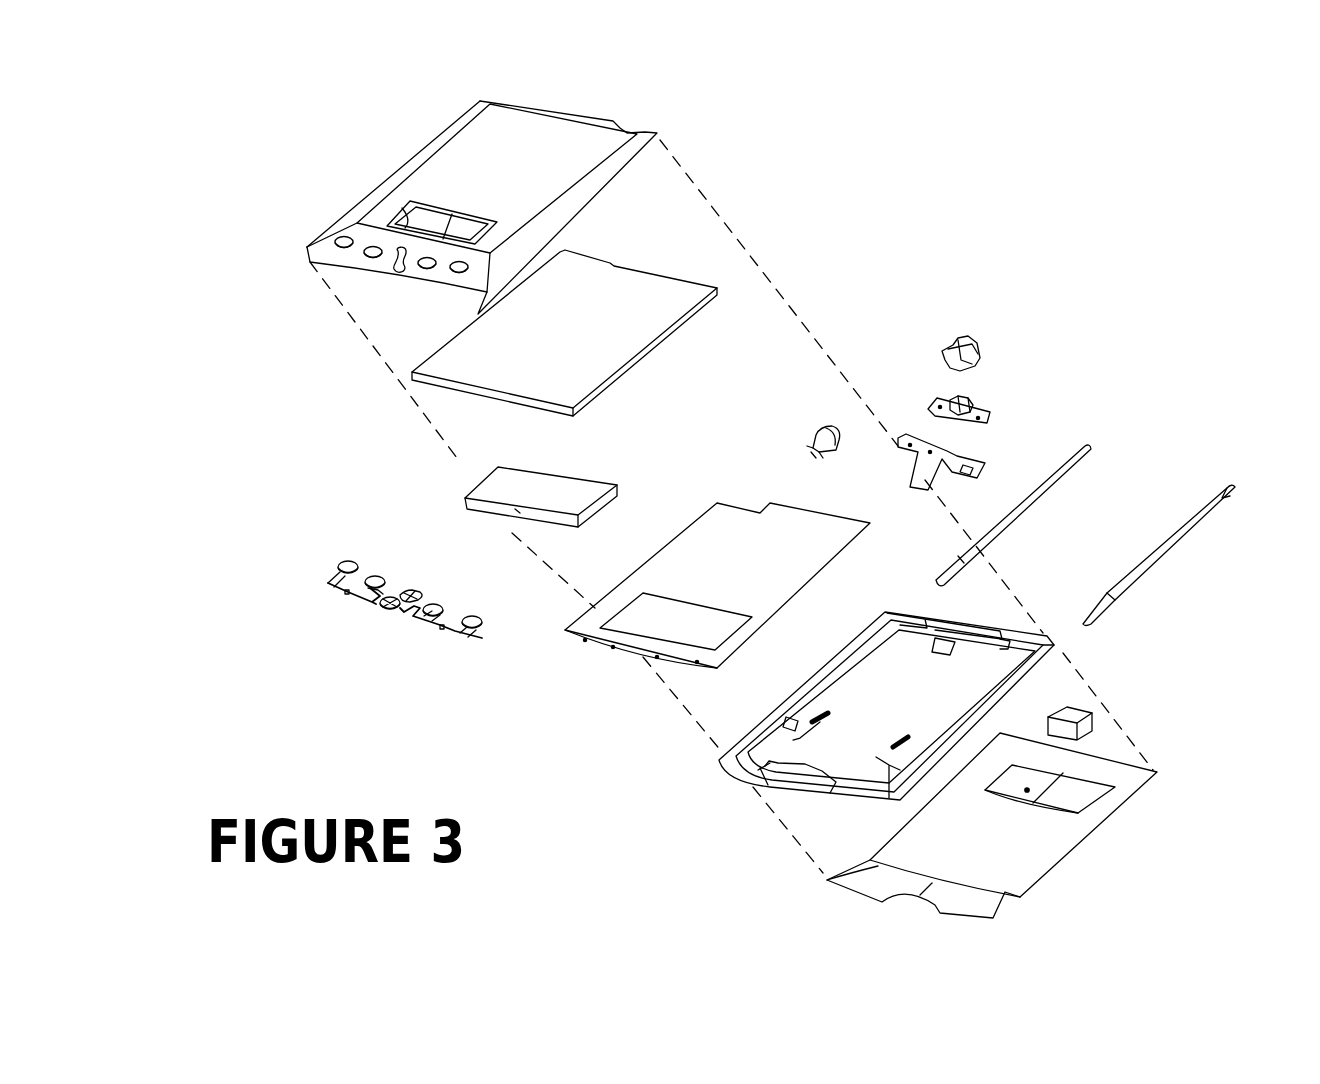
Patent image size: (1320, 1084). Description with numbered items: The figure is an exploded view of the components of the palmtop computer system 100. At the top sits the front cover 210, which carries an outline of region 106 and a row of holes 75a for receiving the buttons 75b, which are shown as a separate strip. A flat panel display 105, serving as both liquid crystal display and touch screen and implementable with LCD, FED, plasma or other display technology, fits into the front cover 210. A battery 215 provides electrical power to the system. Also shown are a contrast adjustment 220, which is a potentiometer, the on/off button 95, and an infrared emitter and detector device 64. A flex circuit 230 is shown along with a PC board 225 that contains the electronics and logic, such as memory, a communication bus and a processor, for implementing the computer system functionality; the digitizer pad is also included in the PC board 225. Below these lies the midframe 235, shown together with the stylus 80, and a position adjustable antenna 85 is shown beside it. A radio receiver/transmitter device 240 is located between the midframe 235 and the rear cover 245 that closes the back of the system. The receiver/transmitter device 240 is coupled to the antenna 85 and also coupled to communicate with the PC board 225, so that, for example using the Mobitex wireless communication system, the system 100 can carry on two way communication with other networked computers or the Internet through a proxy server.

The palmtop computer system 100 is at (171, 100).
The front cover 210 is at (664, 131).
The region 106 is at (411, 218).
The holes 75a is at (306, 250).
The flat panel display 105 is at (686, 280).
The battery 215 is at (470, 480).
The buttons 75b is at (340, 563).
The PC board 225 is at (588, 609).
The contrast adjustment 220 is at (810, 422).
The on/off button 95 is at (966, 330).
The infrared emitter and detector device 64 is at (992, 407).
The flex circuit 230 is at (984, 448).
The position adjustable antenna 85 is at (1095, 438).
The stylus 80 is at (1208, 534).
The midframe 235 is at (1048, 684).
The radio receiver/transmitter device 240 is at (1100, 724).
The rear cover 245 is at (1064, 871).